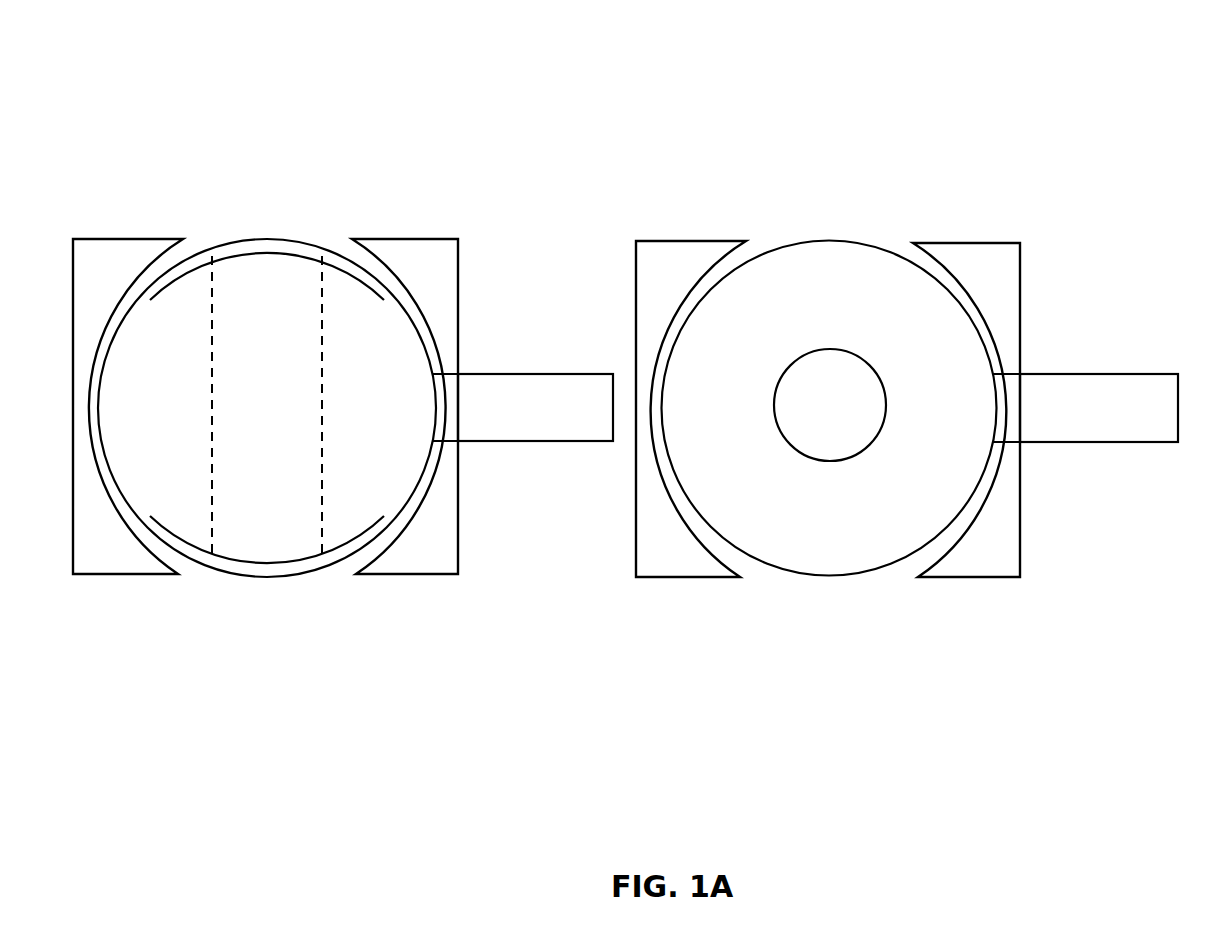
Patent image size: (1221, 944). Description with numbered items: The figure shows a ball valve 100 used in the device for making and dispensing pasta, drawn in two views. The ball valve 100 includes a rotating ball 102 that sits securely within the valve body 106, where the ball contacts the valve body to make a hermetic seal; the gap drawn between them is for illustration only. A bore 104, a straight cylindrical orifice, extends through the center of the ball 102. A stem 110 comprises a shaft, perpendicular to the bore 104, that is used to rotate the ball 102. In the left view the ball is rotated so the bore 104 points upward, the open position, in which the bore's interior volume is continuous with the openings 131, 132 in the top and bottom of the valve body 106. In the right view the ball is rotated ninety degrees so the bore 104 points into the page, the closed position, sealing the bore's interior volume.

The ball valve 100 is at (372, 135).
The rotating ball 102 is at (172, 298).
The bore 104 is at (262, 280).
The valve body 106 is at (420, 250).
The stem 110 is at (528, 422).
The opening 131 is at (242, 240).
The opening 132 is at (272, 593).